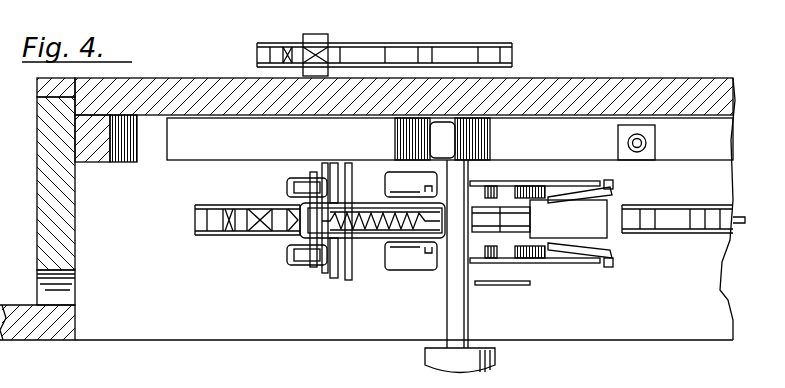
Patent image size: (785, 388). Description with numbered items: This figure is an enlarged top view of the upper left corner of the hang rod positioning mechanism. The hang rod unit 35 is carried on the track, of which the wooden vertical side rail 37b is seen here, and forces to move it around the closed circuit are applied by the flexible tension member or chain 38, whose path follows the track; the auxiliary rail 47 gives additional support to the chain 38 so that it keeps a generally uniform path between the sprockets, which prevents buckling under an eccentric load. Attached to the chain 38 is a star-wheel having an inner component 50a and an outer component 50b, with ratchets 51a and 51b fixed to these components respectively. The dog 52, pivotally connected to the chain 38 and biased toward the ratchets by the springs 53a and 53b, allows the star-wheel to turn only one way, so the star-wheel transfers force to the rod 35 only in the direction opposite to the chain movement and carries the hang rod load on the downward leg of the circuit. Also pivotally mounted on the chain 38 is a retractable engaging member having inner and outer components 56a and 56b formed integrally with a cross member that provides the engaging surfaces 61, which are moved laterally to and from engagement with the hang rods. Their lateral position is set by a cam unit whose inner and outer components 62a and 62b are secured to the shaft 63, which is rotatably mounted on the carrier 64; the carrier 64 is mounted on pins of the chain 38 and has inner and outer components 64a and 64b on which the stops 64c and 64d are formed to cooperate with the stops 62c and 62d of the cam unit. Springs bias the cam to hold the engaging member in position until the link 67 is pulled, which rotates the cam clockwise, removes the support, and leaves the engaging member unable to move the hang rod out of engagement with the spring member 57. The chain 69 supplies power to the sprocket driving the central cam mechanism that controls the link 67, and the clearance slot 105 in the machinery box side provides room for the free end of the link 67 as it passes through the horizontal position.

The hang rod unit 35 is at (472, 322).
The wooden vertical side rail 37b is at (138, 140).
The chain 38 is at (687, 238).
The auxiliary rail 47 is at (632, 233).
The inner component of star-wheel 50a is at (604, 305).
The outer component of star-wheel 50b is at (612, 161).
The ratchet 51a is at (500, 260).
The ratchet 51b is at (550, 158).
The dog 52 is at (539, 219).
The spring 53a is at (615, 254).
The spring 53b is at (695, 193).
The inner component of engaging member 56a is at (416, 260).
The outer component of engaging member 56b is at (411, 180).
The spring member 57 is at (583, 127).
The engaging surface 61 is at (450, 125).
The inner component of cam unit 62a is at (382, 373).
The outer component of cam unit 62b is at (298, 186).
The stop 62c is at (348, 234).
The stop 62d is at (390, 155).
The shaft 63 is at (300, 258).
The carrier 64 is at (300, 228).
The inner component of carrier unit 64a is at (320, 262).
The outer component of carrier unit 64b is at (345, 178).
The stop 64c is at (337, 190).
The stop 64d is at (337, 250).
The link 67 is at (510, 285).
The chain 69 is at (385, 45).
The clearance slot 105 is at (72, 281).